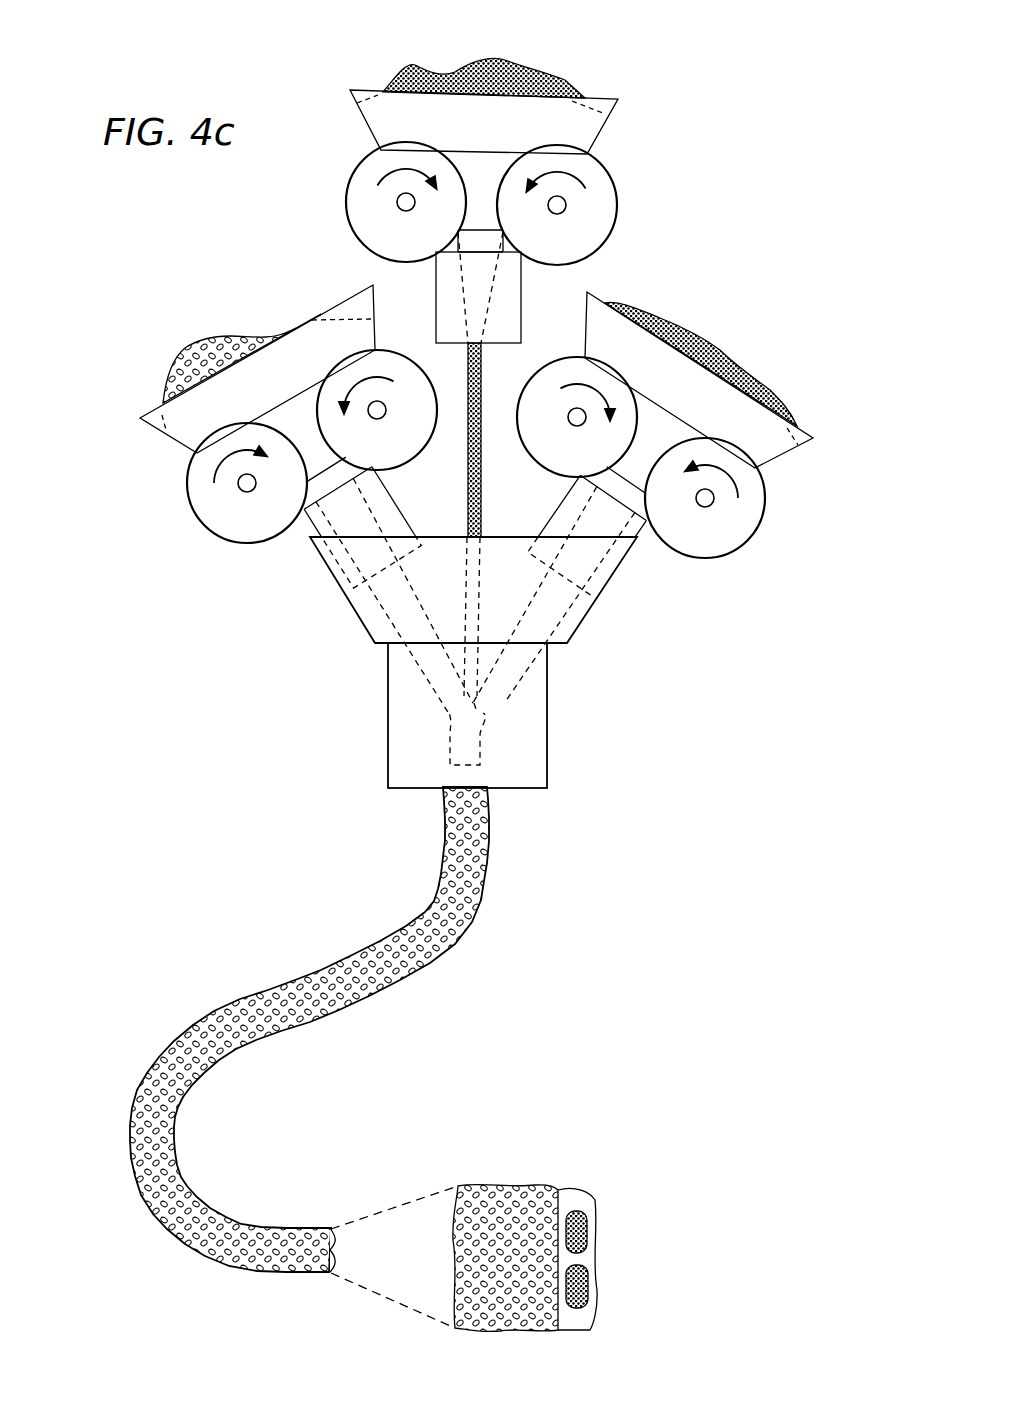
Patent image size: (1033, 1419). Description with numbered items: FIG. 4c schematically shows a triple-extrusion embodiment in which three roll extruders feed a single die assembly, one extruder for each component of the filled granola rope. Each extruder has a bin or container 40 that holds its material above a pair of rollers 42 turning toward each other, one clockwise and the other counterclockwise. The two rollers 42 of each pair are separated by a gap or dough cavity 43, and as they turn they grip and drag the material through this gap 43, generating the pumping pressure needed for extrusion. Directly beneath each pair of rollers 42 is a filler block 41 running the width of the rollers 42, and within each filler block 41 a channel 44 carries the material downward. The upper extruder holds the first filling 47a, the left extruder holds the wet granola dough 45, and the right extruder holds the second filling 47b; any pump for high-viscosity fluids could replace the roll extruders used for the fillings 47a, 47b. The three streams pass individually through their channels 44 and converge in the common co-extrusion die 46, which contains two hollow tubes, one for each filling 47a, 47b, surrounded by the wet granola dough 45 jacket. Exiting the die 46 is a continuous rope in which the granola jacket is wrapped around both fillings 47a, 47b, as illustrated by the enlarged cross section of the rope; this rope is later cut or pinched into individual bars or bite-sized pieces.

The bin or container 40 is at (597, 137).
The filler block 41 is at (436, 292).
The rollers 42 is at (347, 197).
The gap or dough cavity 43 is at (482, 182).
The channel 44 is at (466, 505).
The wet granola dough 45 is at (205, 335).
The co-extrusion die 46 is at (548, 722).
The filling 47a is at (410, 72).
The filling 47b is at (695, 331).